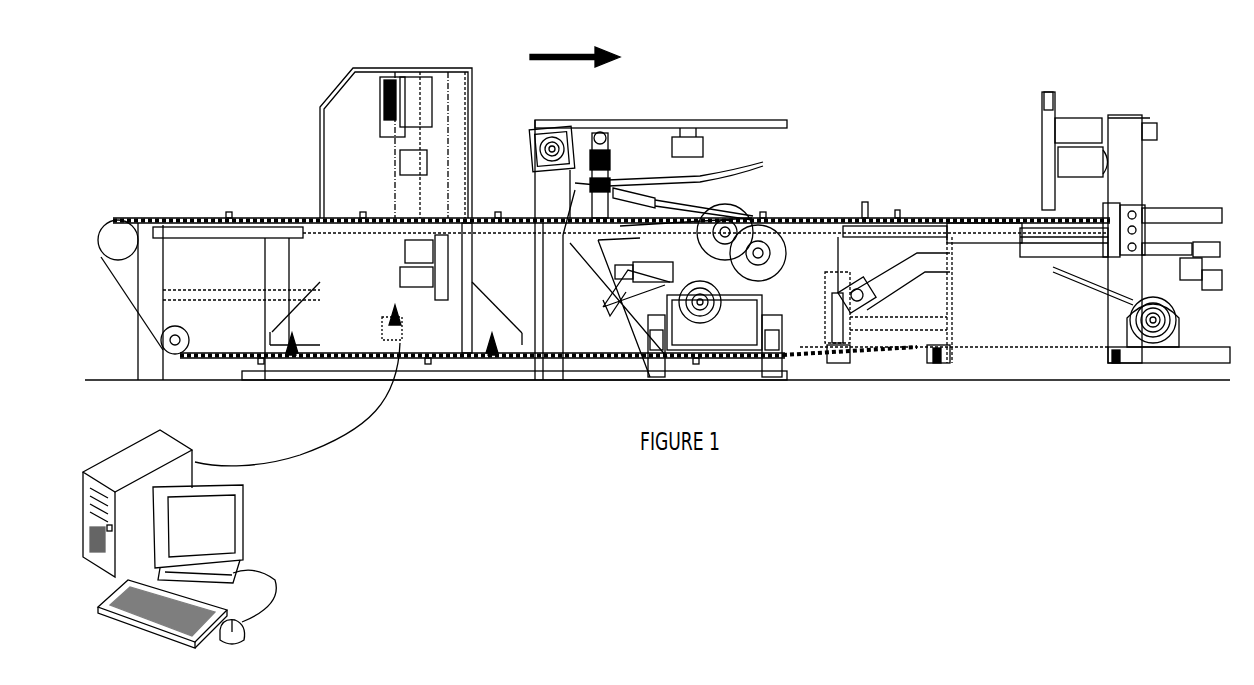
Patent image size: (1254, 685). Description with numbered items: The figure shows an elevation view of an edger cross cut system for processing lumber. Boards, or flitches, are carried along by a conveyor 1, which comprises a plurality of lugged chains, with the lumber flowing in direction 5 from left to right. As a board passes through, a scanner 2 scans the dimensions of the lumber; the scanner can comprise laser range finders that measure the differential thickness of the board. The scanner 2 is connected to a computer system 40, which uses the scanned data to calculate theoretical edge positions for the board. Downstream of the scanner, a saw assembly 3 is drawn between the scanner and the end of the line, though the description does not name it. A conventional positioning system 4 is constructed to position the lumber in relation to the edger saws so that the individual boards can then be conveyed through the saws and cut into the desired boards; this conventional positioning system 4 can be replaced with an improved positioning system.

The conveyor 1 is at (272, 218).
The scanner 2 is at (440, 68).
The saw mechanism 3 is at (753, 218).
The conventional positioning system 4 is at (1017, 190).
The direction 5 is at (567, 50).
The computer system 40 is at (120, 450).